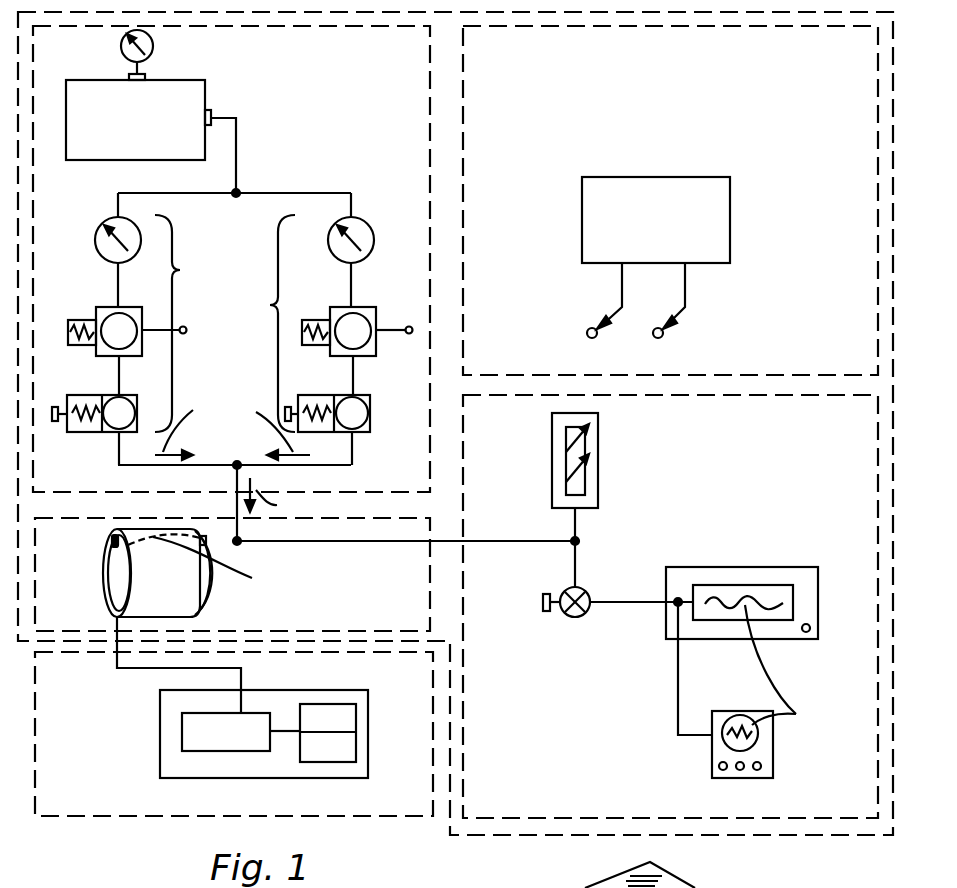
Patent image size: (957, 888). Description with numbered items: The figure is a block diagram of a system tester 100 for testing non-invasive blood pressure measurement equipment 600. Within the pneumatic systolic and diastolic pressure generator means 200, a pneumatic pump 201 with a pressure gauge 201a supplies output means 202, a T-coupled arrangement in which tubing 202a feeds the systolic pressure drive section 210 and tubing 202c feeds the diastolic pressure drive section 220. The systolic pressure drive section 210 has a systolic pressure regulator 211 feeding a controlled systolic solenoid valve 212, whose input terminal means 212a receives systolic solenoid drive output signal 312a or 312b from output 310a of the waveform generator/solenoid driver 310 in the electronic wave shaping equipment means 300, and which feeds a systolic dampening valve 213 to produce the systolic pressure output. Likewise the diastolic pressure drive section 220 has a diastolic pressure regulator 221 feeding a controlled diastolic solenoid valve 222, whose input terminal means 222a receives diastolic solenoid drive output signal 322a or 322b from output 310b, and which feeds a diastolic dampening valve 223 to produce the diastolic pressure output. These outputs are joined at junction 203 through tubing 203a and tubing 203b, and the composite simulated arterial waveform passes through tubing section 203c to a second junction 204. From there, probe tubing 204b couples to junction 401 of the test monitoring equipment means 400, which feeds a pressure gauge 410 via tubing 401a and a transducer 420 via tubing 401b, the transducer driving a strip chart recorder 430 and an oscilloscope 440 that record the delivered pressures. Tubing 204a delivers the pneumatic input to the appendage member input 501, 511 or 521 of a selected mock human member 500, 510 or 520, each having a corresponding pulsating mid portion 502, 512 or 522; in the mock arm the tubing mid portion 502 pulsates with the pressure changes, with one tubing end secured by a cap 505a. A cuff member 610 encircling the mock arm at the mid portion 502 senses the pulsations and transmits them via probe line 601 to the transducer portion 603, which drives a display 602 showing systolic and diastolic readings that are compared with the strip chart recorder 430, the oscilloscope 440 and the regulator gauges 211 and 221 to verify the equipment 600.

The system tester 100 is at (428, 5).
The pneumatic systolic and diastolic pressure generator means 200 is at (398, 56).
The pneumatic pump 201 is at (210, 91).
The pressure gauge 201a is at (154, 45).
The output means 202 is at (254, 175).
The tubing 202a is at (240, 121).
The tubing 202c is at (292, 193).
The junction 203 is at (249, 437).
The tubing 203a is at (198, 467).
The tubing 203b is at (265, 467).
The tubing section 203c is at (243, 523).
The second junction 204 is at (234, 535).
The tubing 204a is at (233, 540).
The probe tubing 204b is at (337, 541).
The systolic pressure drive section 210 is at (167, 323).
The systolic pressure regulator 211 is at (99, 223).
The controlled systolic solenoid valve 212 is at (103, 307).
The input terminal means 212a is at (185, 335).
The systolic dampening valve 213 is at (101, 395).
The diastolic pressure drive section 220 is at (286, 323).
The diastolic pressure regulator 221 is at (360, 223).
The controlled diastolic solenoid valve 222 is at (358, 307).
The input terminal means 222a is at (411, 335).
The diastolic dampening valve 223 is at (358, 432).
The electronic wave shaping equipment means 300 is at (817, 84).
The waveform generator/solenoid driver 310 is at (731, 194).
The output 310a is at (621, 286).
The output 310b is at (688, 281).
The systolic solenoid drive output signal 312a is at (541, 331).
The systolic solenoid drive output signal 312b is at (541, 331).
The diastolic solenoid drive output signal 322a is at (730, 339).
The diastolic solenoid drive output signal 322b is at (730, 339).
The test monitoring equipment means 400 is at (826, 454).
The junction 401 is at (573, 546).
The tubing 401a is at (580, 524).
The tubing 401b is at (578, 568).
The pressure gauge 410 is at (600, 462).
The transducer 420 is at (575, 617).
The strip chart recorder 430 is at (740, 567).
The oscilloscope 440 is at (745, 712).
The mock human member 500 is at (232, 574).
The mock human member 510 is at (126, 573).
The mock human member 520 is at (110, 600).
The appendage member input 501 is at (245, 552).
The appendage member input 511 is at (245, 552).
The appendage member input 521 is at (206, 542).
The mid portion 502 is at (258, 566).
The eyepiece passage 512 is at (258, 566).
The eyepiece passage 522 is at (258, 566).
The cuff member 610 is at (190, 591).
The non-invasive blood pressure measurement equipment 600 is at (295, 812).
The probe line 601 is at (145, 672).
The display 602 is at (361, 730).
The transducer portion 603 is at (190, 733).
The cap 505a is at (603, 882).